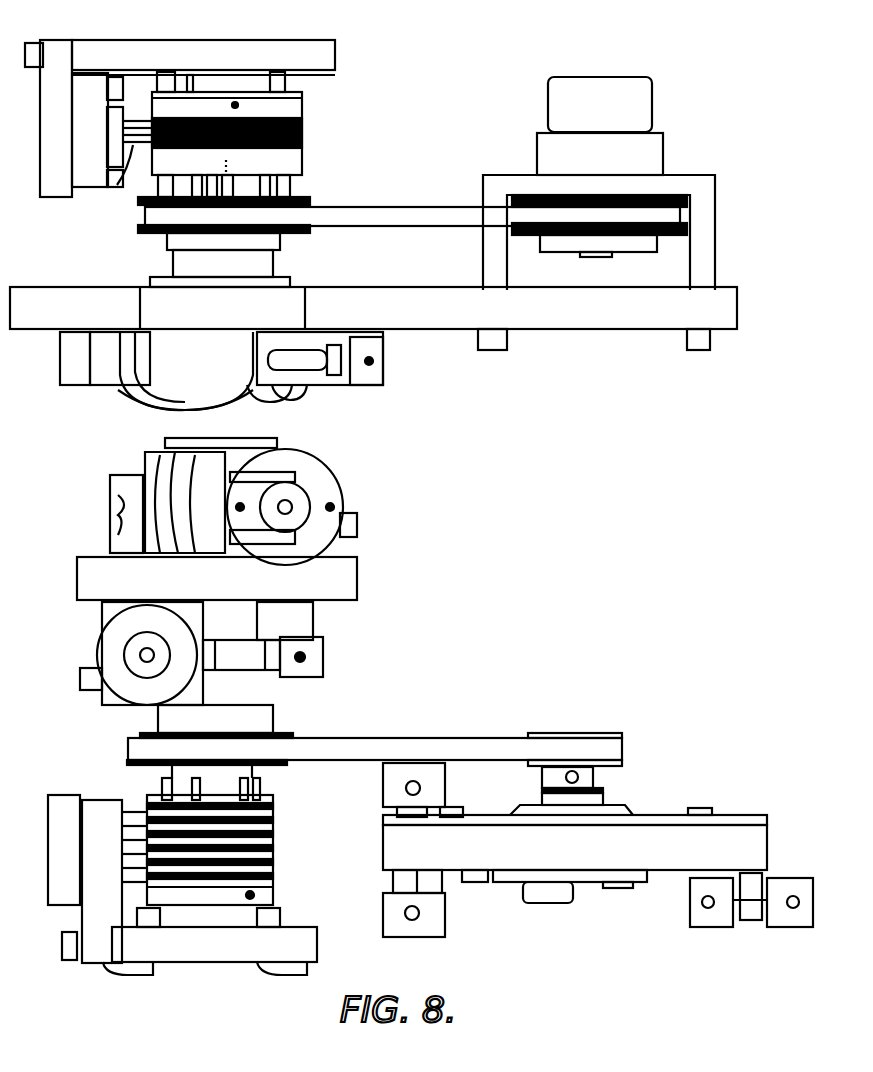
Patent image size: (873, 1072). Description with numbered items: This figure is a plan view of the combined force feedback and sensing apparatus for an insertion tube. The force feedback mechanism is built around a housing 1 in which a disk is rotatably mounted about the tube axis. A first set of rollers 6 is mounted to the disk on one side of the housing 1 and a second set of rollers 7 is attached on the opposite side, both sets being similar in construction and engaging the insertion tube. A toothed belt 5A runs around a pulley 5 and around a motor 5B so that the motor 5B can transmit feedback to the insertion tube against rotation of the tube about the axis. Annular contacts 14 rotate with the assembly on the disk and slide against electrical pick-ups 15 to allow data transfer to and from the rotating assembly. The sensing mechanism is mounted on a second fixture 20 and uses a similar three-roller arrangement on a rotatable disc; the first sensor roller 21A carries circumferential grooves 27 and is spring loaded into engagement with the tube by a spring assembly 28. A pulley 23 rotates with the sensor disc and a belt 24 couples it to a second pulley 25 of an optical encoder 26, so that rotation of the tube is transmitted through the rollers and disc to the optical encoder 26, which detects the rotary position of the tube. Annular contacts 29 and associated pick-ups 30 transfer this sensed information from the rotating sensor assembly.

The housing 1 is at (330, 578).
The pulley 5 is at (285, 732).
The toothed belt 5A is at (412, 750).
The motor 5B is at (636, 788).
The first set of rollers 6 is at (387, 497).
The second set of rollers 7 is at (352, 658).
The annular contacts 14 is at (273, 810).
The electrical pick-ups 15 is at (140, 807).
The second fixture 20 is at (715, 310).
The first sensor roller 21A is at (297, 397).
The pulley 23 is at (300, 200).
The belt 24 is at (400, 218).
The second pulley 25 is at (672, 236).
The optical encoder 26 is at (632, 105).
The circumferential grooves 27 is at (298, 403).
The spring assembly 28 is at (307, 373).
The annular contacts 29 is at (307, 130).
The pick-ups 30 is at (115, 187).